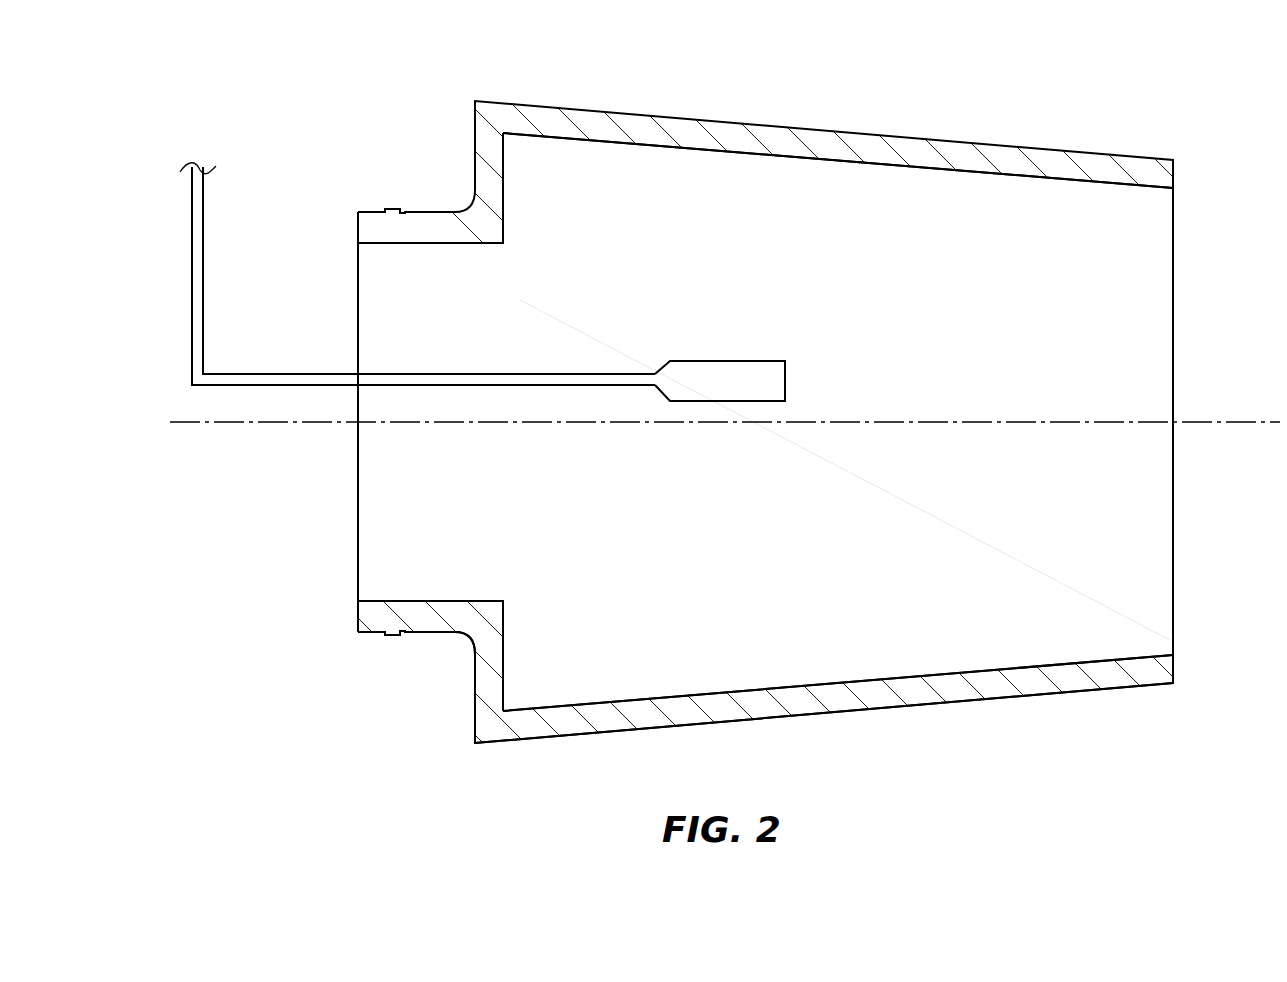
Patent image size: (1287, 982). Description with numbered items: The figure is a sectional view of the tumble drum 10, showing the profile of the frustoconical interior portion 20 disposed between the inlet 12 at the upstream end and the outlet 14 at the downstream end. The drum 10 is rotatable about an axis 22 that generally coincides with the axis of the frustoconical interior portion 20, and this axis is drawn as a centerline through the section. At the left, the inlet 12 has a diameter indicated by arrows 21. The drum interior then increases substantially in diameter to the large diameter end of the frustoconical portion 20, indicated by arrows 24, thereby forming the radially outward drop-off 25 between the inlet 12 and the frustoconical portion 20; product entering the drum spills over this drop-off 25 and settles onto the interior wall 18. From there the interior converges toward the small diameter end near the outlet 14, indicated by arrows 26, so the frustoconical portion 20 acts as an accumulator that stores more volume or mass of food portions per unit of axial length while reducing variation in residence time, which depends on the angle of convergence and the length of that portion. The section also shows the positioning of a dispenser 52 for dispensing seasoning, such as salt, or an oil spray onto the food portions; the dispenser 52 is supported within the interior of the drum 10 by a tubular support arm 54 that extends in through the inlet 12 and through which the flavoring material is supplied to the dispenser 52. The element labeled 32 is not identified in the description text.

The tumble drum 10 is at (1000, 145).
The inlet 12 is at (332, 335).
The outlet 14 is at (1200, 340).
The interior wall 18 is at (858, 163).
The portion with generally frustoconical interior 20 is at (1052, 562).
The arrows indicating inlet diameter 21 is at (428, 241).
The axis 22 is at (1204, 428).
The arrows indicating large diameter end 24 is at (503, 131).
The radially outward drop-off 25 is at (505, 650).
The arrows indicating small diameter end 26 is at (1157, 186).
The nozzle wall 32 is at (645, 718).
The dispenser 52 is at (722, 360).
The tubular support arm 54 is at (530, 372).